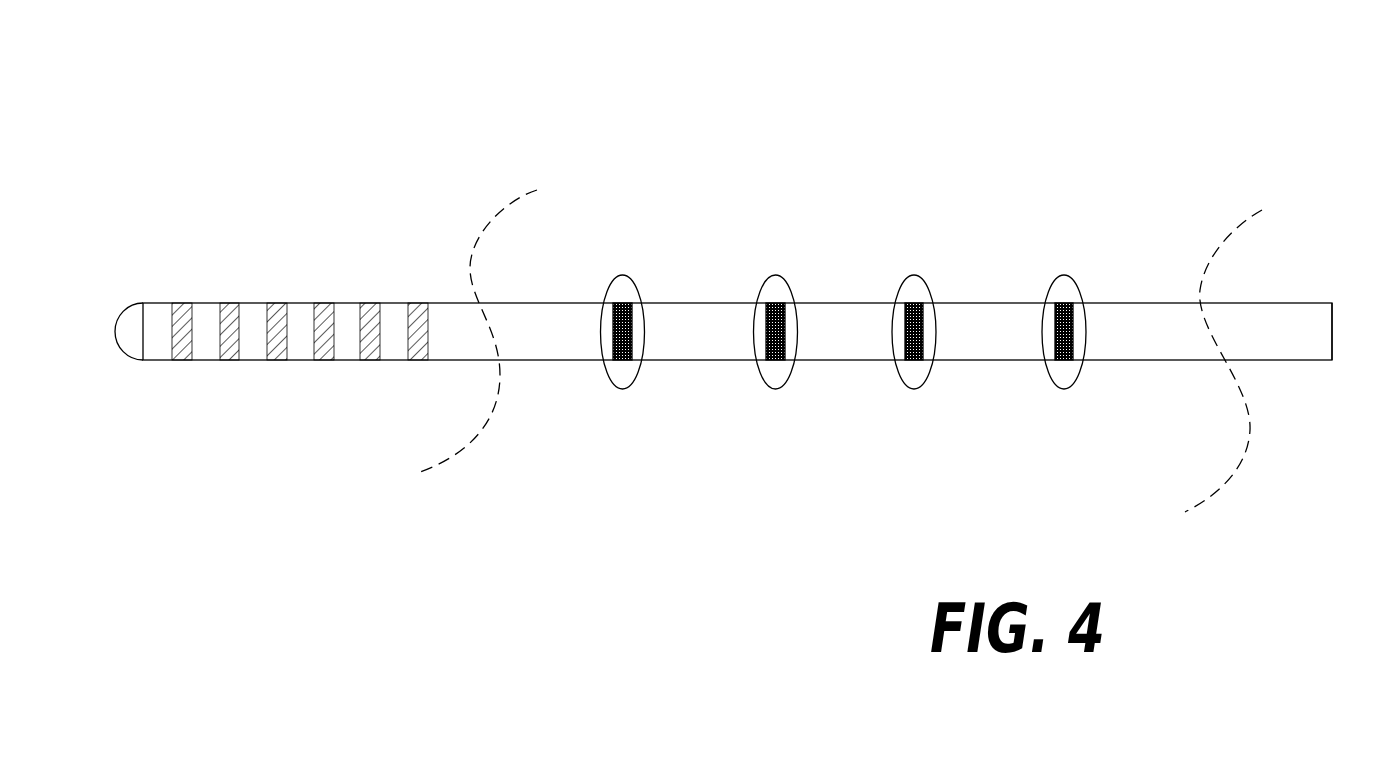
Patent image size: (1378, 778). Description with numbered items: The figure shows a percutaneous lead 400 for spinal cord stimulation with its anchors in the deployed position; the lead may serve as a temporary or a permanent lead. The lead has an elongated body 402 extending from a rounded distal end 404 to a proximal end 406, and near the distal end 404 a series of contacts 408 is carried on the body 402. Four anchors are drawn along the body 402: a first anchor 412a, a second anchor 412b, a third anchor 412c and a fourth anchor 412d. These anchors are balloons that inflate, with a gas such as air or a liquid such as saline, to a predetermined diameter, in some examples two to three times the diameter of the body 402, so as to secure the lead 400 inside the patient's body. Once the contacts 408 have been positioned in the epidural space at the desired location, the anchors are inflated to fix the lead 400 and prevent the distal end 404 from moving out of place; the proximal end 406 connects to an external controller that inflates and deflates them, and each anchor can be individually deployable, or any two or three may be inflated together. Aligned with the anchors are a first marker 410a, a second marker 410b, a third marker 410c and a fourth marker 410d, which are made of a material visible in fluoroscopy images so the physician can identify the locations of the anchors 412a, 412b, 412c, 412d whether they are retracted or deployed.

The percutaneous lead 400 is at (700, 261).
The body 402 is at (700, 362).
The distal end 404 is at (84, 308).
The proximal end 406 is at (1298, 282).
The contacts 408 is at (182, 330).
The first marker 410a is at (611, 333).
The second marker 410b is at (786, 330).
The third marker 410c is at (924, 330).
The fourth marker 410d is at (1074, 330).
The first anchor 412a is at (623, 288).
The second anchor 412b is at (780, 288).
The third anchor 412c is at (918, 288).
The fourth anchor 412d is at (1068, 288).